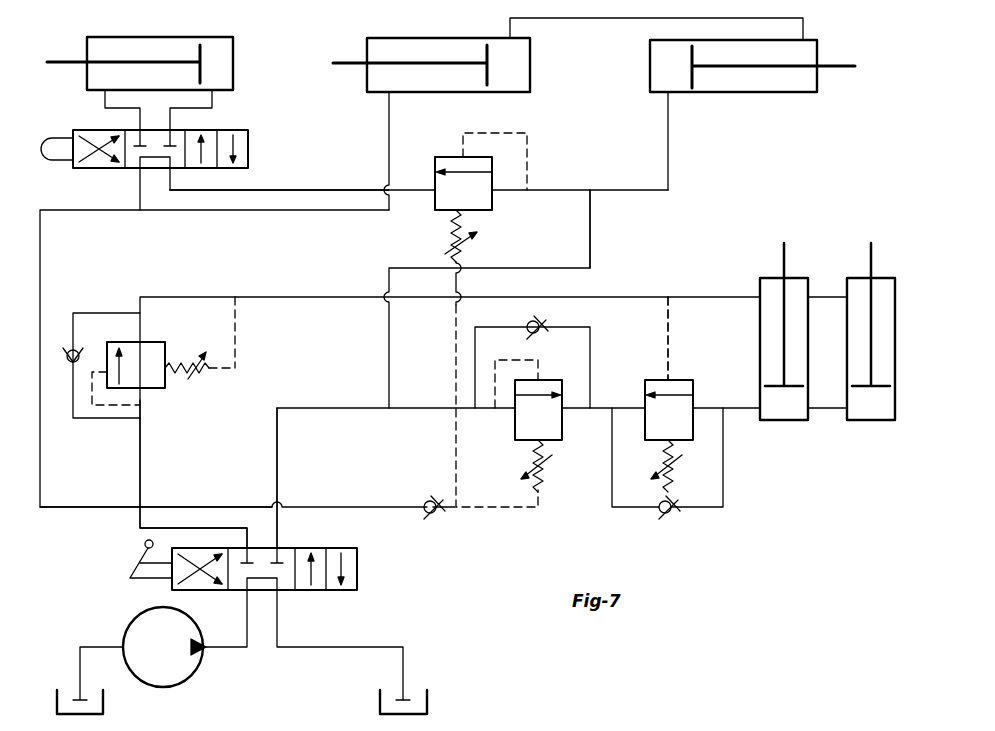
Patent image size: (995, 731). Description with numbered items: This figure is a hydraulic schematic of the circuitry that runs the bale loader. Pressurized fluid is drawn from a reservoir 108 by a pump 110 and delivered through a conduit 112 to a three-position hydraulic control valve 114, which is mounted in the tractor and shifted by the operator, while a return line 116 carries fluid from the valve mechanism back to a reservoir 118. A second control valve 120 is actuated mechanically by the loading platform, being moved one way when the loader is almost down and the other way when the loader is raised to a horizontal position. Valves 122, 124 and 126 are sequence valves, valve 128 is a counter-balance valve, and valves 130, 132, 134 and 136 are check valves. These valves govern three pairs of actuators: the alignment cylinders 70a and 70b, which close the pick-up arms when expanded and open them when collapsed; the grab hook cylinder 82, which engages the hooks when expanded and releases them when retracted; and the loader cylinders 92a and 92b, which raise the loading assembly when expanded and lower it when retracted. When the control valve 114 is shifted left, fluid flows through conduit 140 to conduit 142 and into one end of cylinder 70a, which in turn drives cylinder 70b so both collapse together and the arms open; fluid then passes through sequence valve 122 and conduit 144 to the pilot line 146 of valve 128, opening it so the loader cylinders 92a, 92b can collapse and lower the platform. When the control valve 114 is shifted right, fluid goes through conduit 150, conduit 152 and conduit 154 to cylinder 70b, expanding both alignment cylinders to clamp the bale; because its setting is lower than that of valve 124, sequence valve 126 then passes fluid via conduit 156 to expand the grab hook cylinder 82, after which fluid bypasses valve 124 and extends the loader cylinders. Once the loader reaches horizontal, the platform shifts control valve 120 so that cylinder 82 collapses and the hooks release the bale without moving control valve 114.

The grab hook cylinder 82 is at (219, 37).
The alignment cylinder 70a is at (462, 38).
The alignment cylinder 70b is at (821, 45).
The conduit 144 is at (571, 22).
The conduit 154 is at (669, 136).
The conduit 156 is at (340, 190).
The conduit 152 is at (592, 213).
The sequence valve 126 is at (446, 140).
The control valve 120 is at (96, 169).
The check valve 134 is at (73, 350).
The sequence valve 122 is at (148, 390).
The check valve 136 is at (548, 320).
The sequence valve 124 is at (563, 420).
The counter-balance valve 128 is at (678, 378).
The pilot line 146 is at (670, 333).
The check valve 130 is at (658, 512).
The check valve 132 is at (432, 514).
The loader cylinder 92a is at (781, 420).
The loader cylinder 92b is at (862, 420).
The conduit 142 is at (58, 509).
The conduit 140 is at (187, 515).
The conduit 150 is at (280, 535).
The three-position hydraulic control valve 114 is at (360, 572).
The pump 110 is at (135, 613).
The conduit 112 is at (216, 649).
The return line 116 is at (300, 649).
The reservoir 108 is at (105, 701).
The reservoir 118 is at (430, 695).